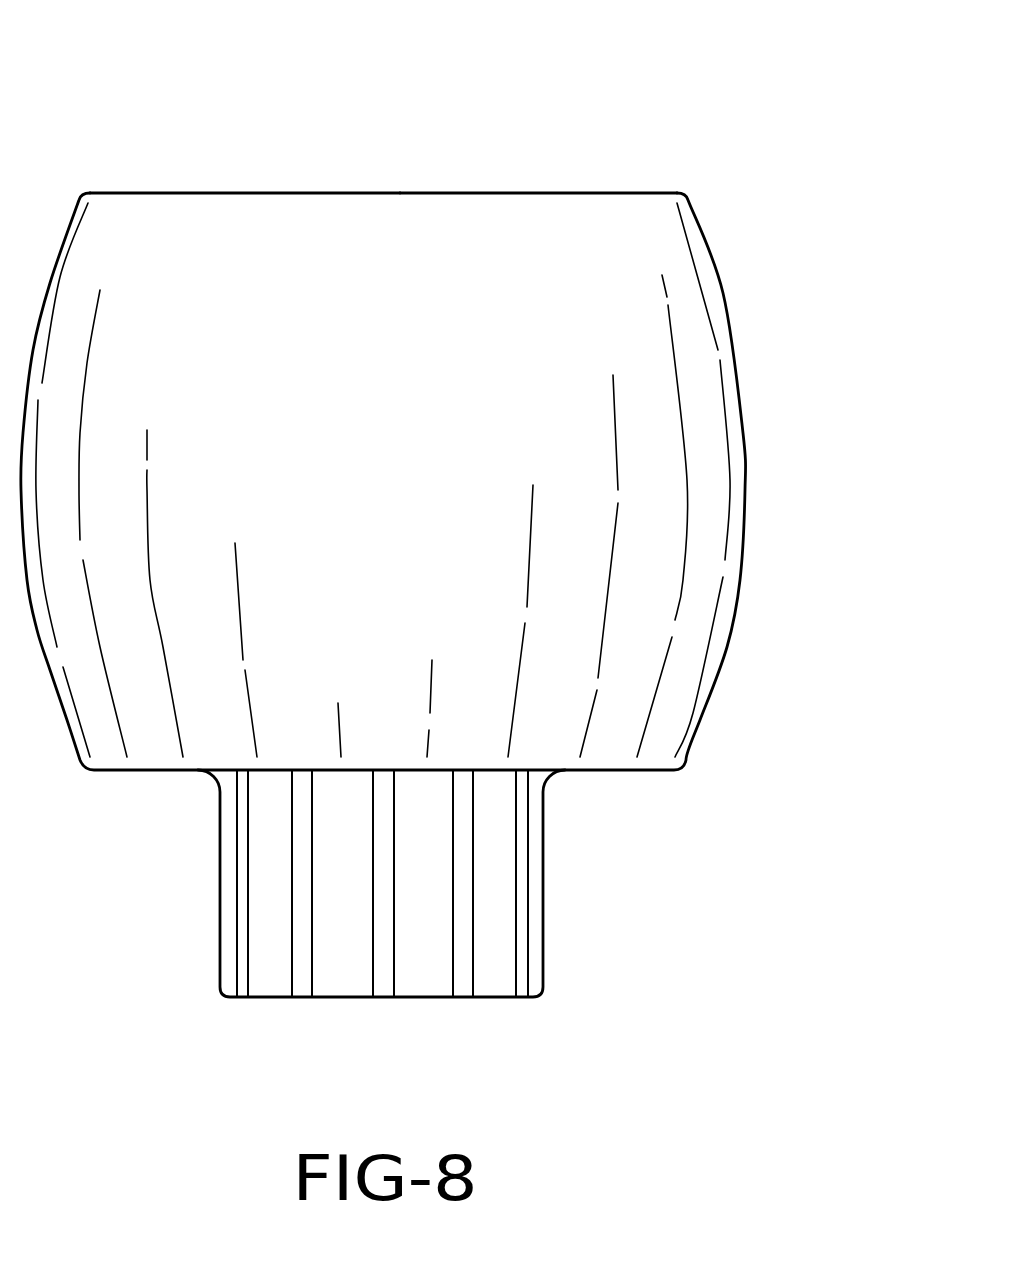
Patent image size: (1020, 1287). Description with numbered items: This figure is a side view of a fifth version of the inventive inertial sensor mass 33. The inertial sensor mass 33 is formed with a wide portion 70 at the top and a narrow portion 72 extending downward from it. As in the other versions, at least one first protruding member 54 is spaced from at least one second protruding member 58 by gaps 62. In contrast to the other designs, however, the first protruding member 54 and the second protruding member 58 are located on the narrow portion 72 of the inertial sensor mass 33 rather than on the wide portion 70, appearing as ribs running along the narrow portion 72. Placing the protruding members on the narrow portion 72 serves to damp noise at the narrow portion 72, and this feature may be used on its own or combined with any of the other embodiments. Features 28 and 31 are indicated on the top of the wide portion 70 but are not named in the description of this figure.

The top surface 28 is at (273, 193).
The top surface portion 31 is at (475, 193).
The inertial sensor mass 33 is at (723, 293).
The wide portion 70 is at (746, 453).
The narrow portion 72 is at (545, 893).
The first protruding member 54 is at (270, 980).
The gap 62 is at (300, 980).
The second protruding member 58 is at (332, 980).